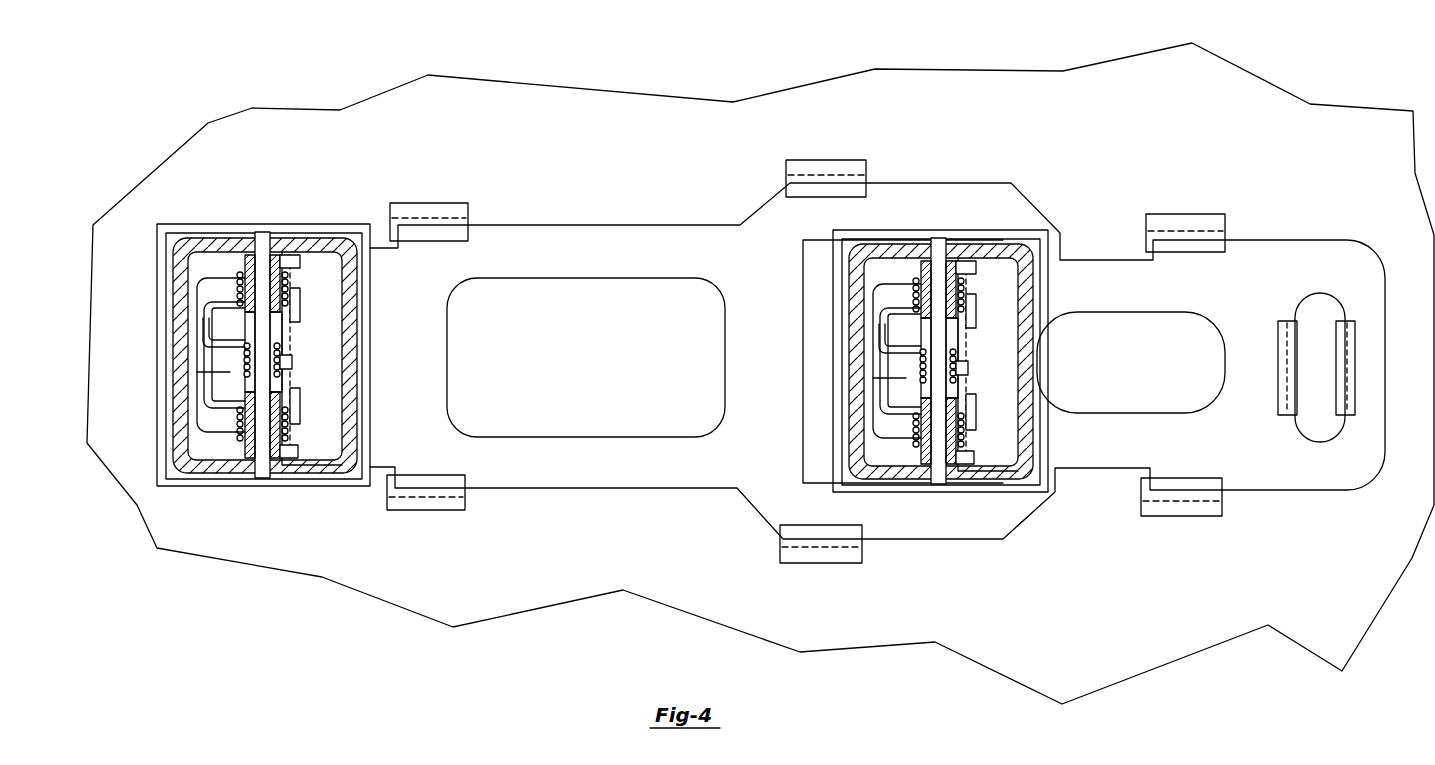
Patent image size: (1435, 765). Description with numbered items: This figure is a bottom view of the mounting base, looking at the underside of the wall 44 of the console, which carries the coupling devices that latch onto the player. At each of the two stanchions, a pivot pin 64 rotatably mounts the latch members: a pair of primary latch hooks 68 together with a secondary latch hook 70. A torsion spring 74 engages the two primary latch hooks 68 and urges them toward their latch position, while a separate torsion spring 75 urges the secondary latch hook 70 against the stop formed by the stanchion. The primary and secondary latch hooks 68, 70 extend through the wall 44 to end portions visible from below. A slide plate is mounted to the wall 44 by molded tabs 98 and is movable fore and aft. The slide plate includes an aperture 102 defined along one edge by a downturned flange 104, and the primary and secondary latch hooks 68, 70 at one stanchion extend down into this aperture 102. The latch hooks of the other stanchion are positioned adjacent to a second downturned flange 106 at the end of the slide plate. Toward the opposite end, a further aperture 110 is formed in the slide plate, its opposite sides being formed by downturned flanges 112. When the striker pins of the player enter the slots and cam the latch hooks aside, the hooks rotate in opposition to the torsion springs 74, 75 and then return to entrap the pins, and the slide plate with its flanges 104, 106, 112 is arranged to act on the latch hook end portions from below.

The wall 44 is at (398, 578).
The pivot pin 64 is at (263, 238).
The primary latch hooks 68 is at (300, 262).
The secondary latch hook 70 is at (298, 316).
The torsion spring 74 is at (220, 307).
The torsion spring 75 is at (218, 373).
The molded tabs 98 is at (432, 207).
The aperture 102 is at (805, 300).
The downturned flange 104 is at (967, 343).
The second downturned flange 106 is at (287, 345).
The aperture 110 is at (1322, 303).
The downturned flanges 112 is at (1290, 355).